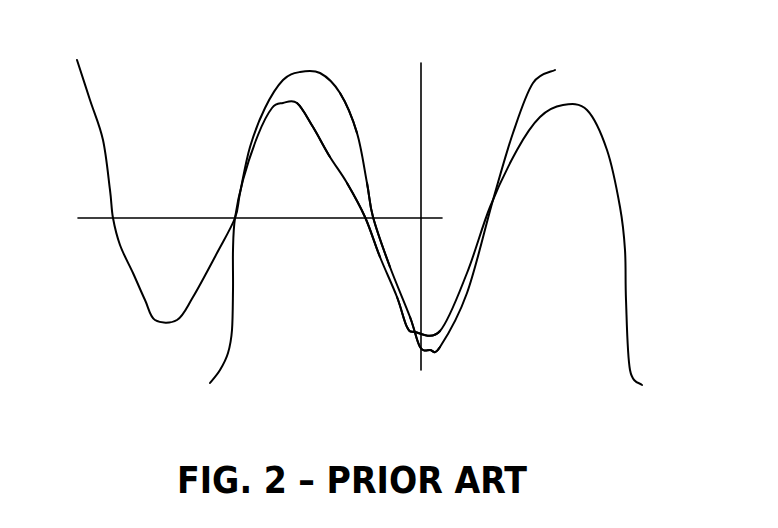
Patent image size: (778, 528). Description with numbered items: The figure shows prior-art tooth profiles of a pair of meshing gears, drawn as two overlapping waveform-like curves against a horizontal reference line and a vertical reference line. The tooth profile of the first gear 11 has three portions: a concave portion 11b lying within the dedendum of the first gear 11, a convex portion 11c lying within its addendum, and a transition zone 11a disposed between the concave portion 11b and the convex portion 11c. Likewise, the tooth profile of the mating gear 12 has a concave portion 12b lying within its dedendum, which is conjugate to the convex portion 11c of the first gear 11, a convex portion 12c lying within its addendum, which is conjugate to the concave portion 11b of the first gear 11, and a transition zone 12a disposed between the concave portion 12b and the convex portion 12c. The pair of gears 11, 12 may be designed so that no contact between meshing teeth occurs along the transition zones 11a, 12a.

The first gear 11 is at (628, 372).
The mating gear 12 is at (528, 88).
The transition zone 11a is at (366, 222).
The concave portion 11b is at (402, 320).
The convex portion 11c is at (313, 130).
The transition zone 12a is at (371, 203).
The concave portion 12b is at (346, 108).
The convex portion 12c is at (390, 282).